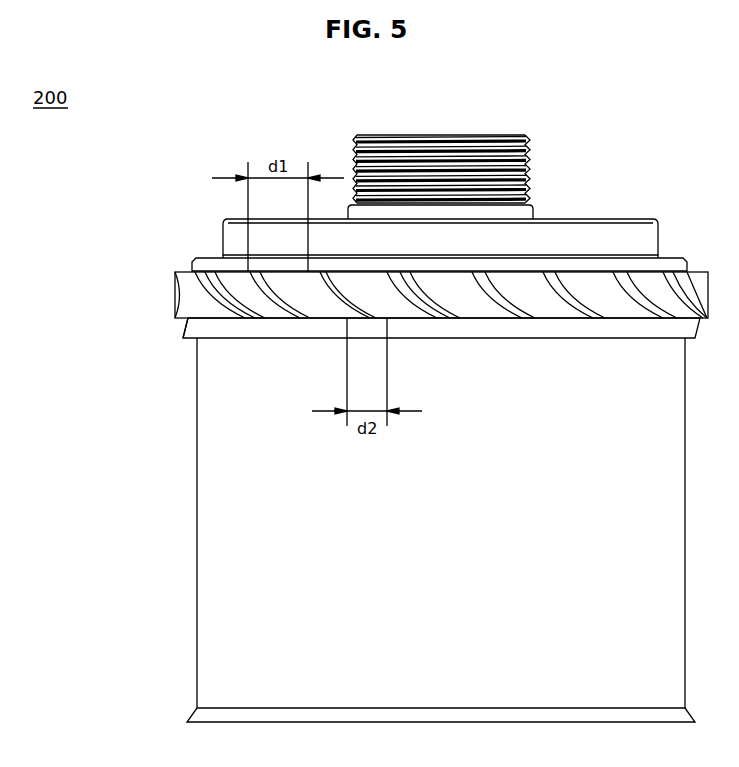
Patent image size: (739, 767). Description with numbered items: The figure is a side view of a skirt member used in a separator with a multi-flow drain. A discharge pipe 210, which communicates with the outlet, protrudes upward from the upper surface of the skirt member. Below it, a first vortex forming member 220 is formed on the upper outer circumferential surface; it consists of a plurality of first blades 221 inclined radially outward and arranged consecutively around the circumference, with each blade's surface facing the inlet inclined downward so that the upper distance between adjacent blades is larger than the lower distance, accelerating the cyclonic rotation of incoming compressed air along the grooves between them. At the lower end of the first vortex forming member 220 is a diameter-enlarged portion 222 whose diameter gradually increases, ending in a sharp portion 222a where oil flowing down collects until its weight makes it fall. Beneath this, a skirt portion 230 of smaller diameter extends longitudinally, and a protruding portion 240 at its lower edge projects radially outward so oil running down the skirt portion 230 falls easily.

The discharge pipe 210 is at (528, 165).
The first vortex forming member 220 is at (152, 291).
The first blades 221 is at (238, 303).
The diameter-enlarged portion 222 is at (192, 326).
The sharp portion 222a is at (188, 336).
The skirt portion 230 is at (205, 534).
The protruding portion 240 is at (195, 710).